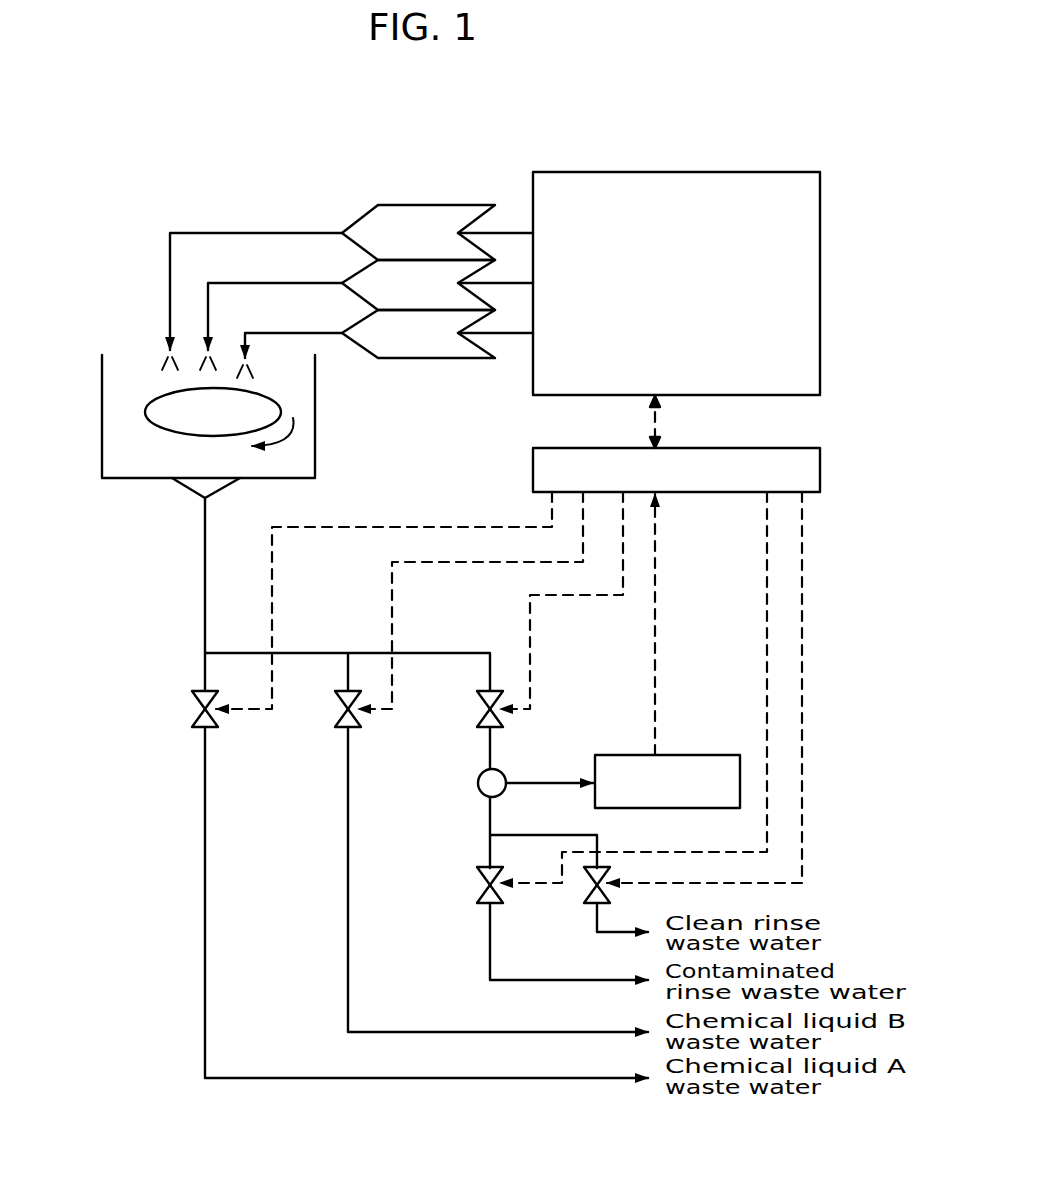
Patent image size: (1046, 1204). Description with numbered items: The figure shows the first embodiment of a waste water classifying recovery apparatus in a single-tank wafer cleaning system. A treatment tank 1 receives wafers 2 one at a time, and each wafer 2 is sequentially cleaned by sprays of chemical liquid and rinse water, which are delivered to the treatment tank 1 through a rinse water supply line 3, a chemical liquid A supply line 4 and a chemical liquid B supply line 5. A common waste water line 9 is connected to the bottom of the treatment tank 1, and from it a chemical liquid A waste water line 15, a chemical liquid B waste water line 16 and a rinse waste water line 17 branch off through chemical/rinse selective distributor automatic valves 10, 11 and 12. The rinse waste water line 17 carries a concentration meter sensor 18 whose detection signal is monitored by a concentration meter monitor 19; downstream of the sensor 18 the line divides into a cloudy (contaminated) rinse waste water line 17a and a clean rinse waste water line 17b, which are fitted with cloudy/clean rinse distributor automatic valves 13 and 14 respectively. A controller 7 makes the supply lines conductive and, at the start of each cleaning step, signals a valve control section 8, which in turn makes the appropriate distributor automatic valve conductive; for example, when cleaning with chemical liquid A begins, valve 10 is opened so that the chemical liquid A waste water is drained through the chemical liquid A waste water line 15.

The treatment tank 1 is at (102, 420).
The wafer 2 is at (168, 434).
The rinse water supply line 3 is at (217, 233).
The chemical liquid A supply line 4 is at (247, 283).
The chemical liquid B supply line 5 is at (270, 333).
The controller 7 is at (611, 192).
The valve control section 8 is at (533, 472).
The common waste water line 9 is at (205, 578).
The distributor automatic valve 10 is at (210, 727).
The distributor automatic valve 11 is at (352, 727).
The distributor automatic valve 12 is at (497, 727).
The distributor automatic valve 13 is at (480, 897).
The distributor automatic valve 14 is at (590, 898).
The chemical liquid A waste water line 15 is at (205, 886).
The chemical liquid B waste water line 16 is at (348, 900).
The rinse waste water line 17 is at (490, 818).
The cloudy rinse waste water line 17a is at (490, 958).
The clean rinse waste water line 17b is at (634, 934).
The concentration meter sensor 18 is at (503, 793).
The concentration meter monitor 19 is at (674, 755).